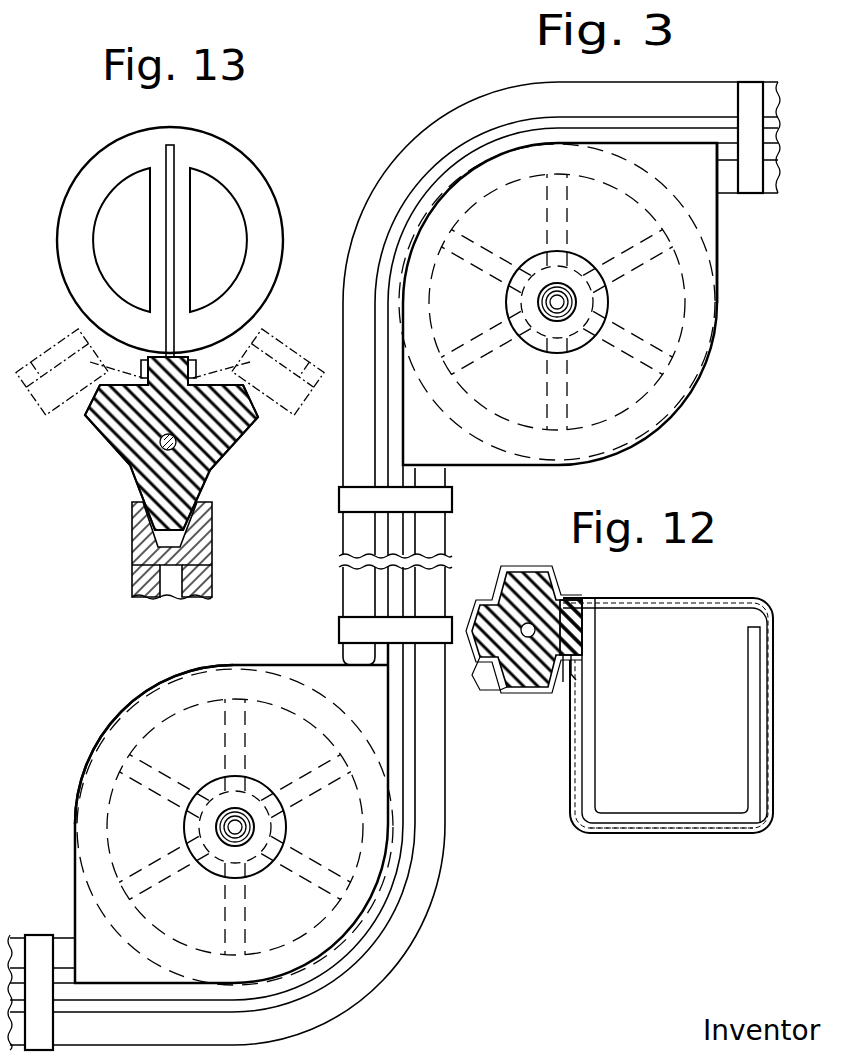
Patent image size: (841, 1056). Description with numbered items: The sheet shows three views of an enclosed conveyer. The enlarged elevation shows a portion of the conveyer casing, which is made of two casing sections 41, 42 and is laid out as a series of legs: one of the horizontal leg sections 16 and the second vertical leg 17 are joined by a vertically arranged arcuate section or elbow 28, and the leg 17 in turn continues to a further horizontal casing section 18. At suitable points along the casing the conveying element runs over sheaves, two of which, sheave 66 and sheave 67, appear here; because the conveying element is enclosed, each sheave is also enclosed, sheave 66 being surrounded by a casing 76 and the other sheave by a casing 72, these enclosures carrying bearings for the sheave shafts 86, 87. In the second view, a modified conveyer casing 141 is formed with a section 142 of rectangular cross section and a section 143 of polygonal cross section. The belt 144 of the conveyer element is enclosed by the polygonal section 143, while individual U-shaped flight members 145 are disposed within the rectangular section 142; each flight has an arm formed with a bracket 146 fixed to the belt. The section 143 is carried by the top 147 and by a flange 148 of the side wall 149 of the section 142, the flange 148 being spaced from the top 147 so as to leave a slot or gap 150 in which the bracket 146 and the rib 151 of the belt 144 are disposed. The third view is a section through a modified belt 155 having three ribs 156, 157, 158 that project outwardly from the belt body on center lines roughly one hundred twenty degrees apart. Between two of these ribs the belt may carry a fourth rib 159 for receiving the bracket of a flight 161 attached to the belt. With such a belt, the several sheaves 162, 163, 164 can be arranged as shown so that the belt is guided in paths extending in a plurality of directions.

In FIG. 3, the arcuate section or elbow 28 is at (446, 120).
In FIG. 3, the horizontal leg section 16 is at (772, 90).
In FIG. 3, the shaft 86 is at (558, 300).
In FIG. 3, the sheave 66 is at (705, 250).
In FIG. 3, the casing 76 is at (718, 325).
In FIG. 3, the casing section 42 is at (352, 528).
In FIG. 3, the casing section 41 is at (396, 530).
In FIG. 3, the second vertical leg 17 is at (352, 583).
In FIG. 3, the sheave 67 is at (275, 668).
In FIG. 3, the casing 72 is at (138, 697).
In FIG. 3, the shaft 87 is at (235, 827).
In FIG. 3, the casing section 18 is at (15, 937).
In FIG. 12, the conveyer casing 141 is at (748, 598).
In FIG. 12, the casing section of rectangular cross section 142 is at (678, 836).
In FIG. 12, the casing section of polygonal cross section 143 is at (525, 690).
In FIG. 12, the belt 144 is at (512, 662).
In FIG. 12, the U-shaped flight member 145 is at (598, 826).
In FIG. 12, the bracket 146 is at (572, 635).
In FIG. 12, the top 147 is at (670, 598).
In FIG. 12, the flange 148 is at (573, 662).
In FIG. 12, the side wall 149 is at (572, 772).
In FIG. 12, the slot or gap 150 is at (582, 606).
In FIG. 12, the rib 151 is at (567, 625).
In FIG. 13, the belt 155 is at (132, 466).
In FIG. 13, the rib 156 is at (107, 421).
In FIG. 13, the rib 157 is at (197, 498).
In FIG. 13, the rib 158 is at (238, 417).
In FIG. 13, the fourth rib 159 is at (158, 362).
In FIG. 13, the flight 161 is at (255, 183).
In FIG. 13, the sheave 162 is at (55, 340).
In FIG. 13, the sheave 163 is at (143, 538).
In FIG. 13, the sheave 164 is at (276, 345).